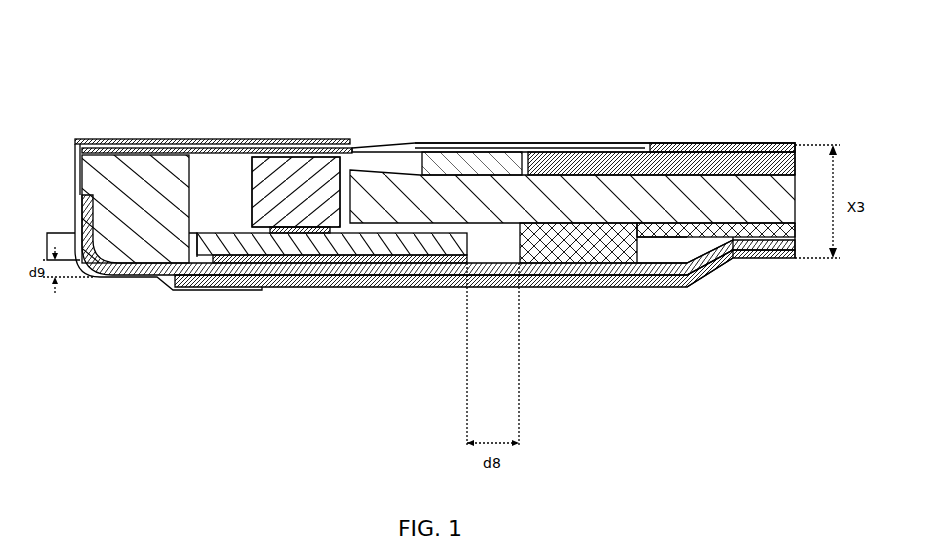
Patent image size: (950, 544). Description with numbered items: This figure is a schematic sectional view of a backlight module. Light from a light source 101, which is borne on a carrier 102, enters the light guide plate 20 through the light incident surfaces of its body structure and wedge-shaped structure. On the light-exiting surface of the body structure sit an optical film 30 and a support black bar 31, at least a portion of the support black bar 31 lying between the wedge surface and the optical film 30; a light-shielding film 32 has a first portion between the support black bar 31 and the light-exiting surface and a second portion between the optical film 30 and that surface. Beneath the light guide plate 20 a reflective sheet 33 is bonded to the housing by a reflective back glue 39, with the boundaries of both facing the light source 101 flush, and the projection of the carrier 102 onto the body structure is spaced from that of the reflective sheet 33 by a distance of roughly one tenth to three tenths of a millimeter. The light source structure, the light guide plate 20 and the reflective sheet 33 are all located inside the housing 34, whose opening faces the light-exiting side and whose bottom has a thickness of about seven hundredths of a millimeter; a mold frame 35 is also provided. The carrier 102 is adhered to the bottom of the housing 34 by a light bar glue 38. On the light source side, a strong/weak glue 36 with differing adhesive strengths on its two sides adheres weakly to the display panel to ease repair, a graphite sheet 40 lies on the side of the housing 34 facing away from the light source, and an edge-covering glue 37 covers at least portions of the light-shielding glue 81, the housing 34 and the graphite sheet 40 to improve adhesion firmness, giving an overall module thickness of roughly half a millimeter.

The light guide plate 20 is at (773, 265).
The optical film 30 is at (722, 112).
The support black bar 31 is at (493, 107).
The light-shielding film 32 is at (597, 122).
The reflective sheet 33 is at (668, 292).
The housing 34 is at (205, 320).
The mold frame 35 is at (122, 300).
The strong/weak glue 36 is at (88, 88).
The edge-covering glue 37 is at (175, 92).
The light bar glue 38 is at (395, 175).
The reflective back glue 39 is at (573, 303).
The graphite sheet 40 is at (278, 330).
The light-shielding glue 81 is at (253, 97).
The light source 101 is at (323, 107).
The carrier 102 is at (427, 302).